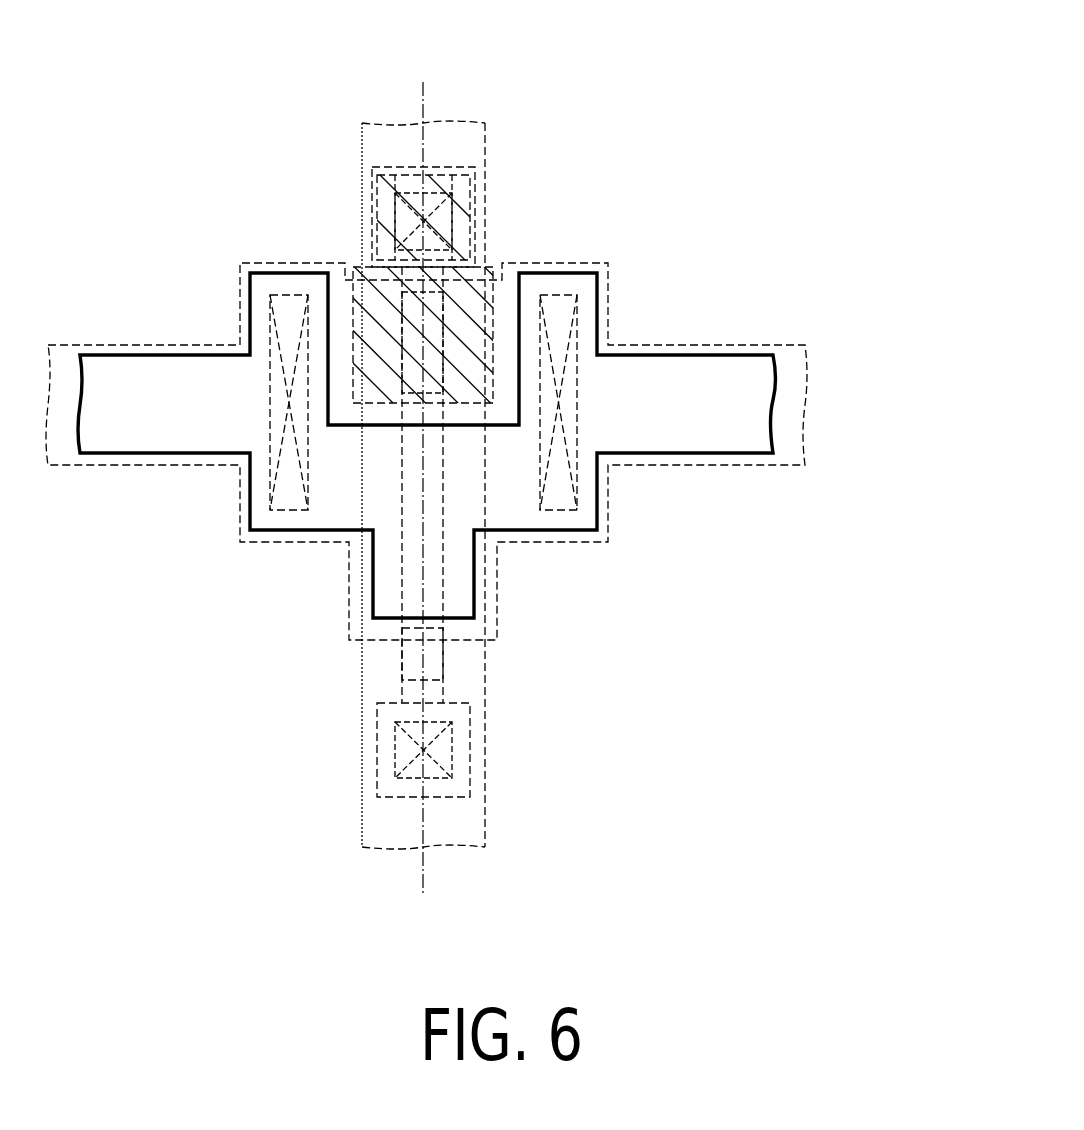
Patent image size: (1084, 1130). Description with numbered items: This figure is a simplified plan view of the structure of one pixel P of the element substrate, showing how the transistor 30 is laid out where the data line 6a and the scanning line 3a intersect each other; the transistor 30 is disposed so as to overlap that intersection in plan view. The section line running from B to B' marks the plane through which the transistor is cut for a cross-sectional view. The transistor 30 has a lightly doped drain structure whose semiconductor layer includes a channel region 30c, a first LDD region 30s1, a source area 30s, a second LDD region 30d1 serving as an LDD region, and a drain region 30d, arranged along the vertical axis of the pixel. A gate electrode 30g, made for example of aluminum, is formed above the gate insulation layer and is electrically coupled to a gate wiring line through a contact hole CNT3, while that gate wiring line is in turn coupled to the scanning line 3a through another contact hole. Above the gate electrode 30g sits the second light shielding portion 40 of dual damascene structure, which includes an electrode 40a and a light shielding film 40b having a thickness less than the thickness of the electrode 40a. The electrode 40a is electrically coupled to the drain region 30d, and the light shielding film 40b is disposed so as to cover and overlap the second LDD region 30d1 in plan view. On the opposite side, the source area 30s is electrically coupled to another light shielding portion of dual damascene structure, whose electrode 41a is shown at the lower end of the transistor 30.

The pixel P is at (688, 74).
The section line B is at (399, 485).
The section line B' is at (396, 884).
The data line 6a is at (477, 150).
The transistor 30 is at (900, 203).
The gate electrode 30g is at (463, 490).
The scanning line 3a is at (63, 462).
The contact hole CNT3 is at (273, 317).
The second light shielding portion 40 is at (208, 148).
The electrode 40a is at (378, 217).
The light shielding film 40b is at (353, 312).
The drain region 30d is at (452, 222).
The second LDD region 30d1 is at (445, 352).
The channel region 30c is at (432, 567).
The first LDD region 30s1 is at (432, 658).
The source area 30s is at (458, 752).
The electrode 41a is at (442, 780).